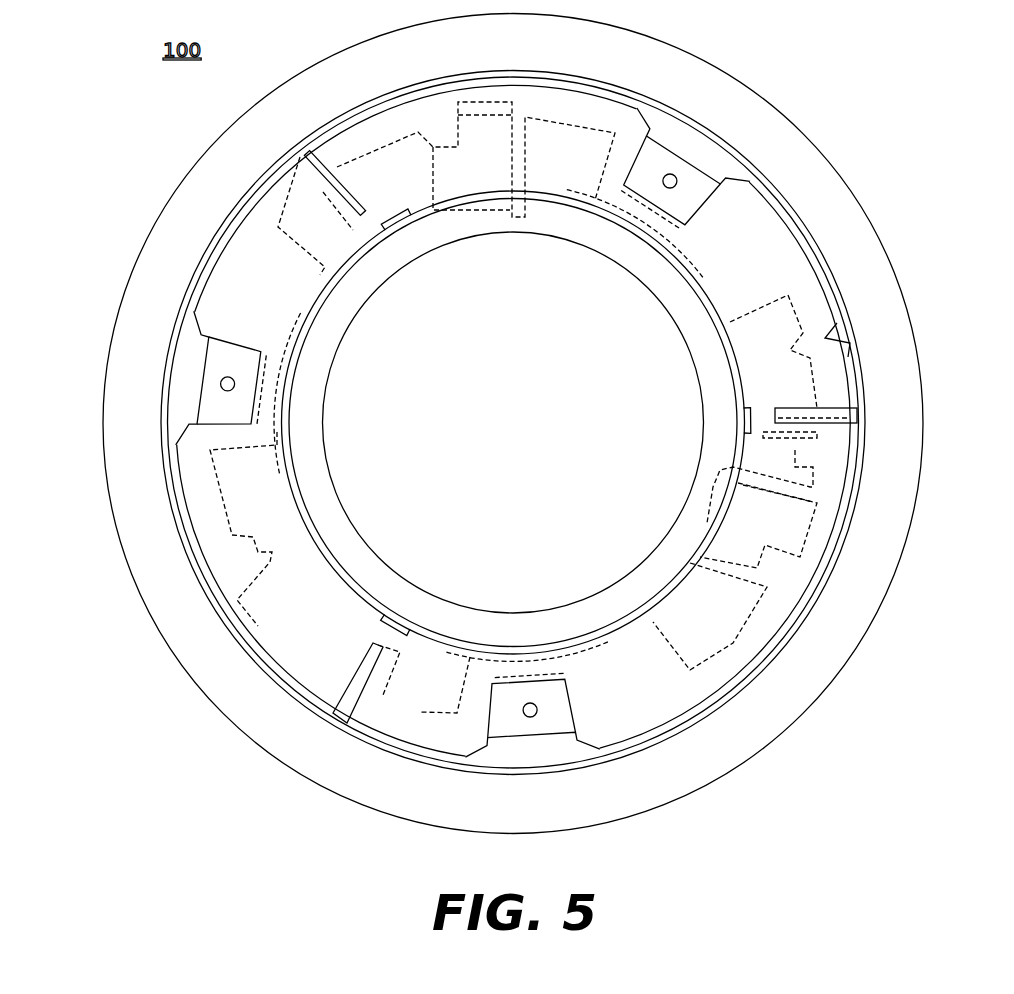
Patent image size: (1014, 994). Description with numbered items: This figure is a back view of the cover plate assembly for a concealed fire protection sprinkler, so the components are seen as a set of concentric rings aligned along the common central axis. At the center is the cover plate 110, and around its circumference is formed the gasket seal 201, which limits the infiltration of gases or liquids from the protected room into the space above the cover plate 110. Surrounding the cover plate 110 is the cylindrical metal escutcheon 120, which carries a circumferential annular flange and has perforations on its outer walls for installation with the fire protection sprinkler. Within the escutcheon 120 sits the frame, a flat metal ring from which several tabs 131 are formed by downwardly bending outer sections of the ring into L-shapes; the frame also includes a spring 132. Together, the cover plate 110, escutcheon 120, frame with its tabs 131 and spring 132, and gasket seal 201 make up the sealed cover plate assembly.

The cover plate 110 is at (603, 427).
The escutcheon 120 is at (241, 293).
The tabs 131 is at (693, 180).
The spring 132 is at (357, 558).
The gasket seal 201 is at (873, 155).